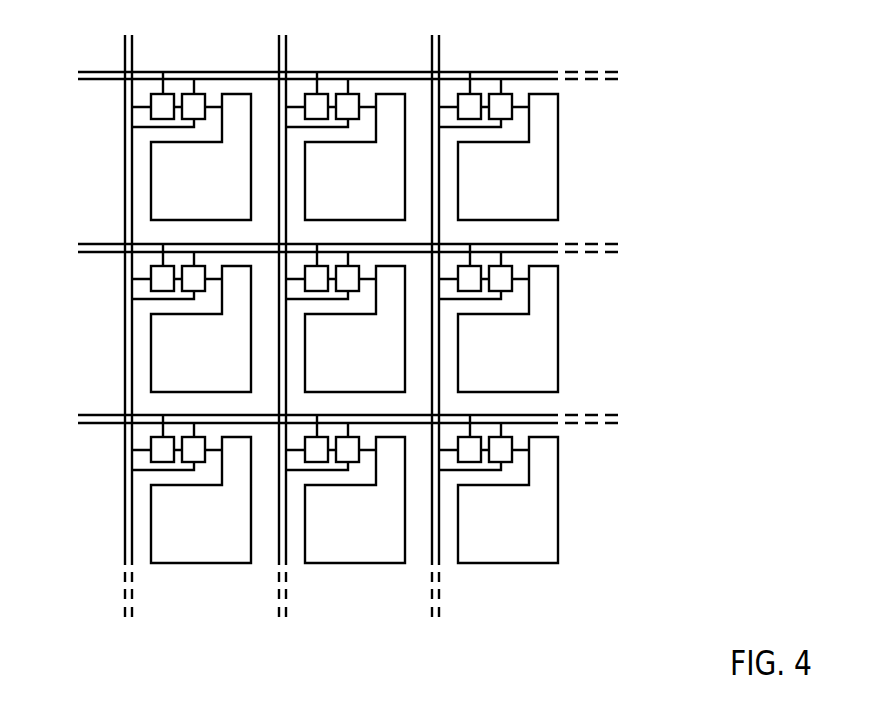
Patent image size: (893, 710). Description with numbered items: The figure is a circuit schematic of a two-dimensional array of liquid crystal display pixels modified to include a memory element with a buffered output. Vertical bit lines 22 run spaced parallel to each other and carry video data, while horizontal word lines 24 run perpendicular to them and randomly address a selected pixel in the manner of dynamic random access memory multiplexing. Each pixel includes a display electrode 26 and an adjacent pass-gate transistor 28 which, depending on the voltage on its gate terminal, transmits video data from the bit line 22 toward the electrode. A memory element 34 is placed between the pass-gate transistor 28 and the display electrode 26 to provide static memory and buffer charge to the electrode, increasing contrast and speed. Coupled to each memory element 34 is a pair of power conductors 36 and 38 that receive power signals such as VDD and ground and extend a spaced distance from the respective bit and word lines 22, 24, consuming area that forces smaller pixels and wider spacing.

The bit line 22 is at (125, 163).
The word line 24 is at (558, 244).
The display electrode 26 is at (19, 124).
The pass-gate transistor 28 is at (107, 111).
The memory element 34 is at (122, 298).
The conductor 36 is at (123, 360).
The conductor 38 is at (558, 252).